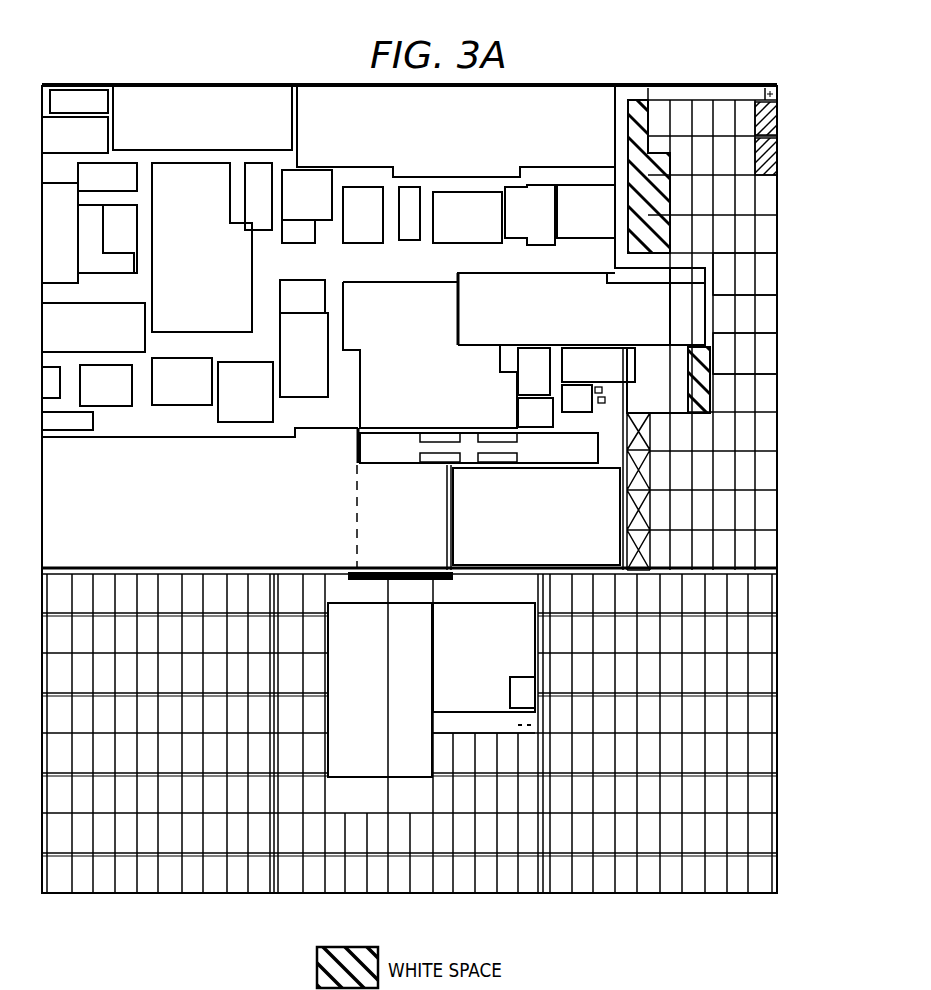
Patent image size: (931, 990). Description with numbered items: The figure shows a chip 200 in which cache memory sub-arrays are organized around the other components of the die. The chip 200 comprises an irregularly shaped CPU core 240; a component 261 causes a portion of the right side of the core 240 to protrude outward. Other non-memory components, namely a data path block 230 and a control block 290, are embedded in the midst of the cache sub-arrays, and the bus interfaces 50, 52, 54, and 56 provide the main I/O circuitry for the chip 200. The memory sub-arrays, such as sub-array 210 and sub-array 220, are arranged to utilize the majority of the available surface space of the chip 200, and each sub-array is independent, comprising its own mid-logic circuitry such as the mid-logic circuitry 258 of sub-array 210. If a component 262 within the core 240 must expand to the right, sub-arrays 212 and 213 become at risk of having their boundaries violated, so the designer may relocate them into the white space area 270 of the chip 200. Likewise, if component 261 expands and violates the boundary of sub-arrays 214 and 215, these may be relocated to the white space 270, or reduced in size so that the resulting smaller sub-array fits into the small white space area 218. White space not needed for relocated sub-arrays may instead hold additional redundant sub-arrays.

The chip 200 is at (208, 62).
The CPU core 240 is at (321, 86).
The white space area 270 is at (638, 102).
The memory sub-array 210 is at (775, 118).
The mid-logic circuitry 258 is at (775, 138).
The memory sub-array 220 is at (772, 196).
The memory sub-array 214 is at (725, 277).
The memory sub-array 215 is at (725, 350).
The small white space area 218 is at (705, 390).
The component 261 is at (470, 272).
The component 262 is at (547, 530).
The memory sub-array 212 is at (640, 482).
The memory sub-array 213 is at (640, 548).
The data path block 230 is at (380, 734).
The control block 290 is at (503, 690).
The bus interface 50 is at (774, 895).
The bus interface 52 is at (546, 895).
The bus interface 54 is at (274, 895).
The bus interface 56 is at (45, 895).